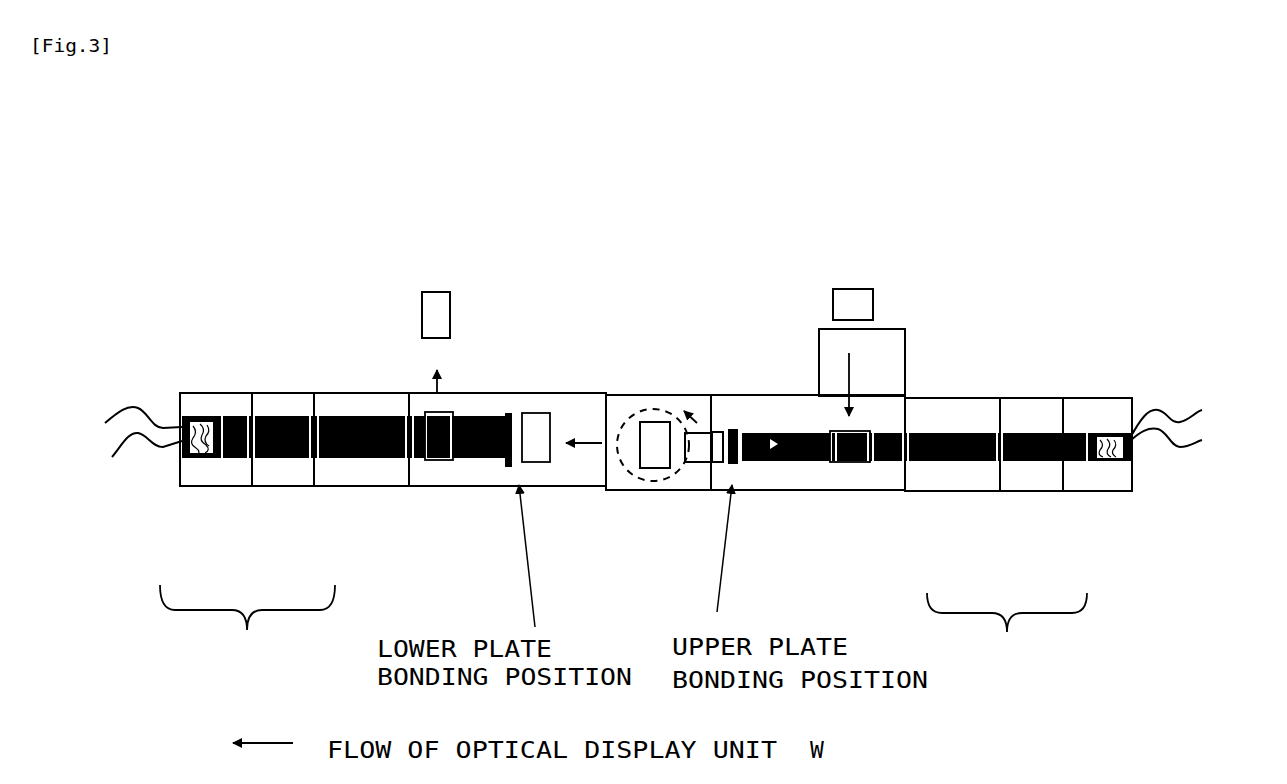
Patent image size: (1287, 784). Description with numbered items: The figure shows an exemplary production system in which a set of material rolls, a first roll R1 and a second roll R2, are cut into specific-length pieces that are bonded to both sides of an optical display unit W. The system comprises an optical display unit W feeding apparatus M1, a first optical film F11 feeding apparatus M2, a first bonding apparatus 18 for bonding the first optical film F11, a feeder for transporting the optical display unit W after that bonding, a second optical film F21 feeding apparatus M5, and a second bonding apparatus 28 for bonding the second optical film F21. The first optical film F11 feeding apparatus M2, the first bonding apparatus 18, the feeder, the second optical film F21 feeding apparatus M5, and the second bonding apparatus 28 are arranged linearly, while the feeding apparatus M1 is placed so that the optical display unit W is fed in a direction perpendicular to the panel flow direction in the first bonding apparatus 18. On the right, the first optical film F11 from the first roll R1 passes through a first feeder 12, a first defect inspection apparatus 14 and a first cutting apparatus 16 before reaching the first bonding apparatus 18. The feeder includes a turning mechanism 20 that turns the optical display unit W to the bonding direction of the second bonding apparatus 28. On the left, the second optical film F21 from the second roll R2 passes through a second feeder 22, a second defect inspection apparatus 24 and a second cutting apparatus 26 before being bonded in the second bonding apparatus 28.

The first feeder 12 is at (1093, 492).
The first defect inspection apparatus 14 is at (1028, 492).
The first cutting apparatus 16 is at (945, 492).
The first bonding apparatus 18 is at (822, 488).
The turning mechanism 20 is at (625, 488).
The second feeder 22 is at (215, 487).
The second defect inspection apparatus 24 is at (275, 487).
The second cutting apparatus 26 is at (345, 487).
The second bonding apparatus 28 is at (430, 487).
The optical display unit feeding apparatus M1 is at (795, 346).
The first optical film feeding apparatus M2 is at (1007, 634).
The second optical film feeding apparatus M5 is at (247, 628).
The optical display unit W is at (436, 292).
The first optical film F11 is at (1203, 420).
The first roll R1 is at (1196, 444).
The second optical film F21 is at (114, 425).
The second roll R2 is at (123, 454).